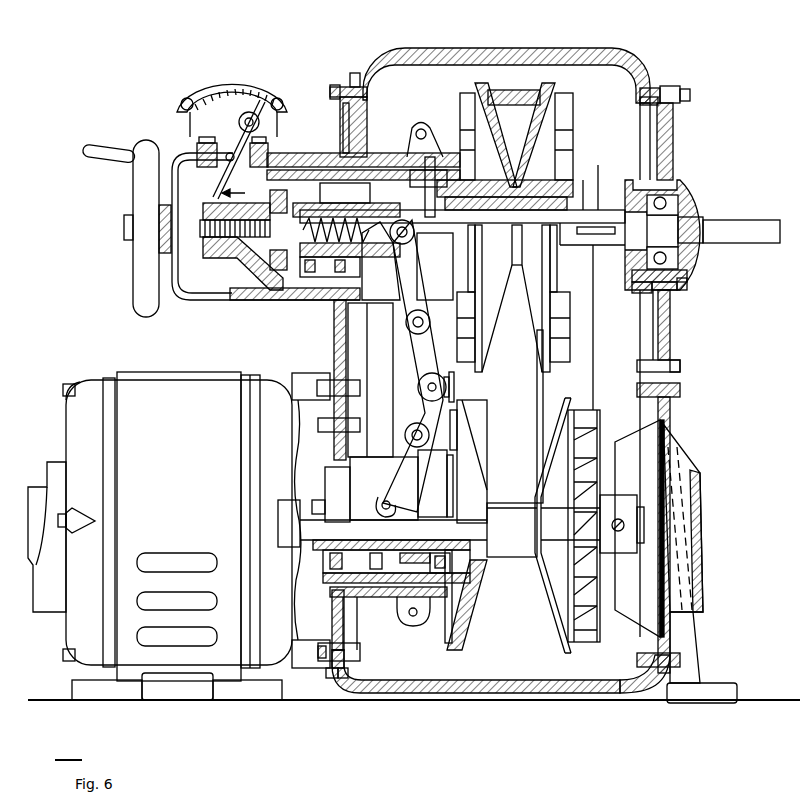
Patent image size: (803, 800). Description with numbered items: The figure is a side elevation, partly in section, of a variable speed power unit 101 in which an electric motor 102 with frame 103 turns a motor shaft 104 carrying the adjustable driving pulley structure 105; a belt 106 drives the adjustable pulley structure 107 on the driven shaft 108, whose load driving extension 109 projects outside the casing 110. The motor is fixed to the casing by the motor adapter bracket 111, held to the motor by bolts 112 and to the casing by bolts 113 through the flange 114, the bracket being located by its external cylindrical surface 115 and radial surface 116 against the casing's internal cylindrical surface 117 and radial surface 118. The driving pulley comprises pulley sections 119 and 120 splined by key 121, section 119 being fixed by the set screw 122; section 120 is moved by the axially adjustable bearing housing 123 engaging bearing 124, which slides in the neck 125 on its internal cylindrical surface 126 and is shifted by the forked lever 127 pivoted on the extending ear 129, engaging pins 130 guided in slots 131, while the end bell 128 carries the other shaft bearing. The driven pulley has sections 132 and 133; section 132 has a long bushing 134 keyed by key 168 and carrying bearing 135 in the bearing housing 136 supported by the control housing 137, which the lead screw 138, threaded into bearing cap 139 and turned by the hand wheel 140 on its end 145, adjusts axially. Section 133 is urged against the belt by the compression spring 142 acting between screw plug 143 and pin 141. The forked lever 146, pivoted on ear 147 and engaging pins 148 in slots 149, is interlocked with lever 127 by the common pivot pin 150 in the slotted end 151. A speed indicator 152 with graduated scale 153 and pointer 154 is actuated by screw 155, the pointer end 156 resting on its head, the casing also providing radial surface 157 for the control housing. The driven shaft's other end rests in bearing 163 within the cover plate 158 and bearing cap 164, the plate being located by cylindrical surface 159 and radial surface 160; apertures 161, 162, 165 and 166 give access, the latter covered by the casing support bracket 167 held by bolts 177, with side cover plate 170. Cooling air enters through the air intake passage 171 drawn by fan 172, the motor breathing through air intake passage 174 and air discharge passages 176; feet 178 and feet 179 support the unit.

The variable speed power unit 101 is at (545, 693).
The driving electric motor 102 is at (195, 473).
The frame 103 is at (182, 371).
The motor shaft 104 is at (290, 522).
The adjustable pulley structure 105 is at (533, 641).
The belt 106 is at (543, 395).
The adjustable pulley structure 107 is at (530, 122).
The driven shaft 108 is at (590, 215).
The load driving extension 109 is at (740, 220).
The casing 110 is at (612, 50).
The motor adapter bracket 111 is at (285, 370).
The bolts 112 is at (303, 372).
The bolts 113 is at (320, 386).
The flange 114 is at (330, 592).
The external cylindrical surface 115 is at (326, 675).
The radial surface 116 is at (348, 648).
The internal cylindrical surface 117 is at (340, 700).
The radial surface 118 is at (360, 658).
The pulley section 119 is at (548, 618).
The pulley section 120 is at (475, 612).
The key 121 is at (510, 503).
The set screw 122 is at (625, 518).
The axially adjustable bearing housing 123 is at (337, 478).
The bearing 124 is at (392, 615).
The neck 125 is at (378, 445).
The internal cylindrical surface 126 is at (325, 563).
The forked lever 127 is at (420, 398).
The end bell 128 is at (75, 418).
The extending ear 129 is at (426, 470).
The pins 130 is at (382, 495).
The slots 131 is at (414, 498).
The pulley section 132 is at (555, 92).
The pulley section 133 is at (478, 92).
The long bushing 134 is at (583, 200).
The bearing 135 is at (280, 300).
The axially adjustable bearing housing 136 is at (312, 300).
The control housing 137 is at (216, 300).
The lead screw 138 is at (196, 240).
The bearing cap 139 is at (205, 268).
The hand wheel 140 is at (135, 292).
The pin 141 is at (412, 160).
The compression spring 142 is at (402, 366).
The screw plug 143 is at (335, 230).
The end 145 is at (124, 225).
The forked lever 146 is at (410, 350).
The extending ear 147 is at (430, 326).
The pins 148 is at (408, 242).
The slots 149 is at (412, 236).
The common pivot pin 150 is at (418, 385).
The slotted end 151 is at (418, 392).
The speed indicator 152 is at (200, 122).
The graduated scale 153 is at (215, 88).
The pointer 154 is at (260, 127).
The screw 155 is at (215, 180).
The end of pointer / cylindrical surface 156 is at (352, 73).
The radial surface 157 is at (367, 95).
The cover plate 158 is at (673, 150).
The internal cylindrical surface 159 is at (680, 90).
The radial surface 160 is at (645, 102).
The aperture 161 is at (345, 112).
The aperture 162 is at (652, 118).
The bearing 163 is at (680, 200).
The bearing cap 164 is at (633, 282).
The aperture 165 is at (405, 628).
The aperture 166 is at (664, 415).
The casing support bracket 167 is at (700, 490).
The key 168 is at (590, 234).
The cover plate 170 is at (593, 330).
The air intake passage 171 is at (692, 612).
The fan 172 is at (575, 648).
The air intake passage 174 is at (43, 620).
The air discharge passages 176 is at (180, 596).
The bolts 177 is at (680, 390).
The feet 178 is at (72, 690).
The feet 179 is at (712, 690).